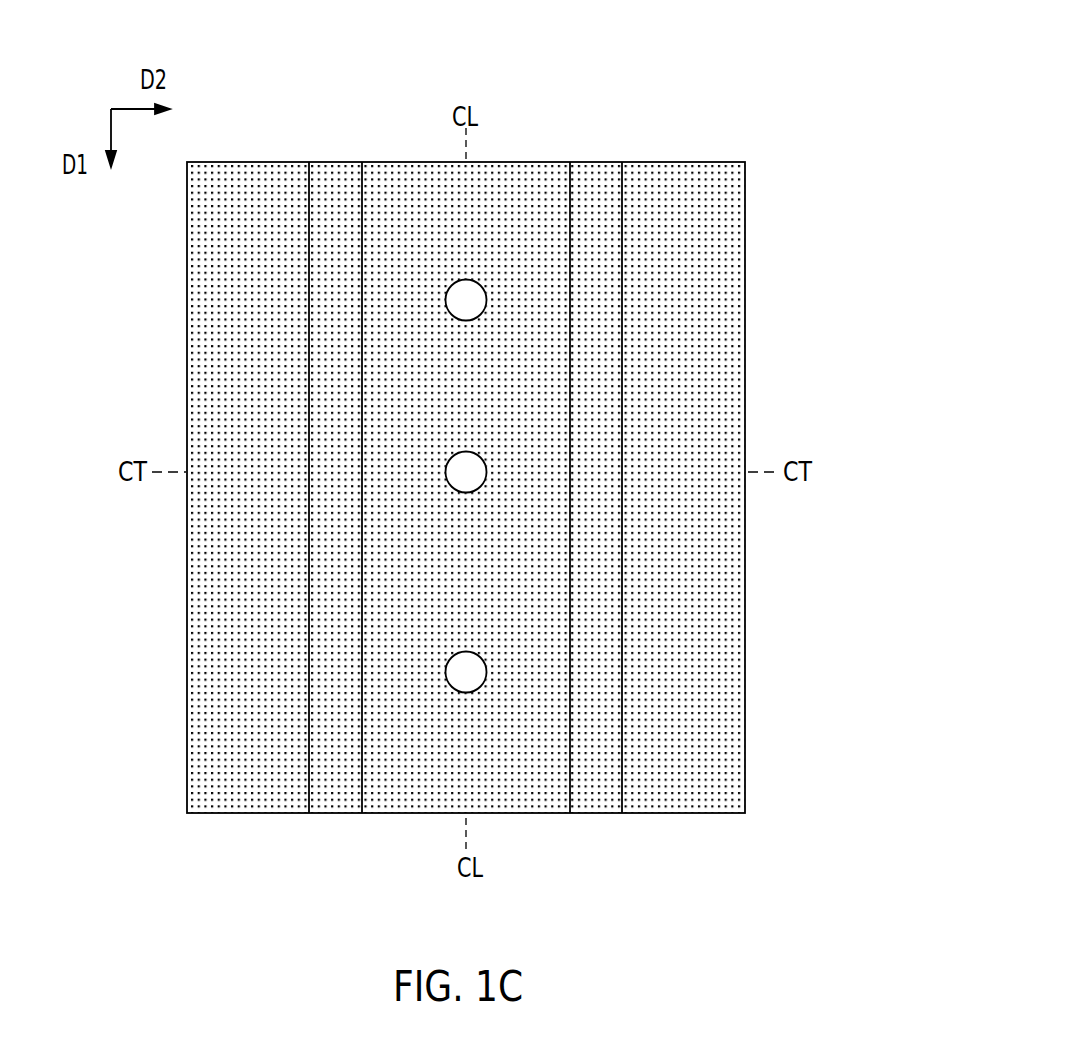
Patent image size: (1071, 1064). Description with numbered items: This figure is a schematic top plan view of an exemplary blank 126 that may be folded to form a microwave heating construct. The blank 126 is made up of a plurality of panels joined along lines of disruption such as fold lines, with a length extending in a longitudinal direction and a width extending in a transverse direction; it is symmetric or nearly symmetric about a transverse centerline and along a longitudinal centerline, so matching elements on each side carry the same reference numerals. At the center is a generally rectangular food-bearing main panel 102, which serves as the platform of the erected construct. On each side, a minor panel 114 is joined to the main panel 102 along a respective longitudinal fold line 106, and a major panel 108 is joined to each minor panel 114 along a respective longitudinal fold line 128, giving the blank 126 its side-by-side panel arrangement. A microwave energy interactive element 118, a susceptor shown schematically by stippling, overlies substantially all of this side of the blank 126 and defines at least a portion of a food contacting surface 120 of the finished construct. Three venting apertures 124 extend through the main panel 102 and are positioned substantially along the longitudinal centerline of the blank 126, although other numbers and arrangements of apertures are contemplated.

The main panel 102 is at (538, 178).
The longitudinal fold lines 106 is at (362, 367).
The major panel 108 is at (237, 177).
The minor panels 114 is at (337, 177).
The microwave energy interactive element 118 is at (732, 779).
The food contacting surface 120 is at (483, 768).
The venting apertures 124 is at (486, 294).
The blank 126 is at (770, 84).
The longitudinal fold lines 128 is at (309, 286).